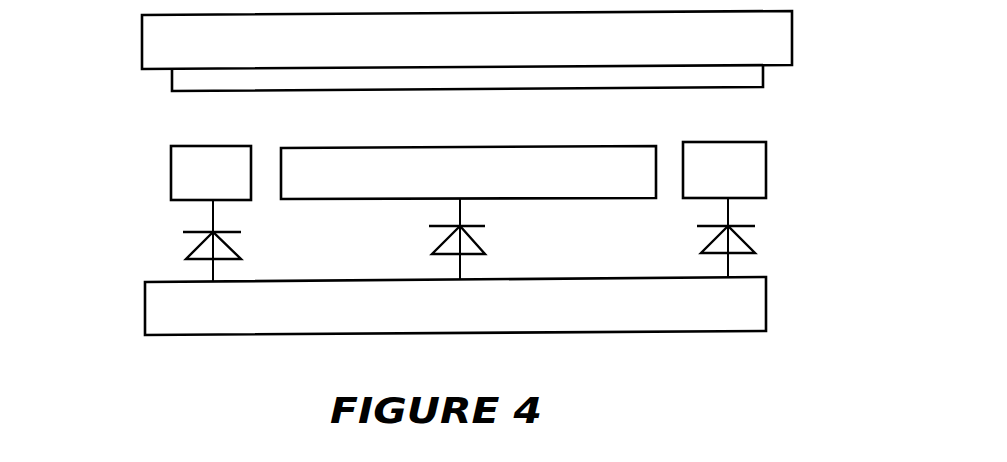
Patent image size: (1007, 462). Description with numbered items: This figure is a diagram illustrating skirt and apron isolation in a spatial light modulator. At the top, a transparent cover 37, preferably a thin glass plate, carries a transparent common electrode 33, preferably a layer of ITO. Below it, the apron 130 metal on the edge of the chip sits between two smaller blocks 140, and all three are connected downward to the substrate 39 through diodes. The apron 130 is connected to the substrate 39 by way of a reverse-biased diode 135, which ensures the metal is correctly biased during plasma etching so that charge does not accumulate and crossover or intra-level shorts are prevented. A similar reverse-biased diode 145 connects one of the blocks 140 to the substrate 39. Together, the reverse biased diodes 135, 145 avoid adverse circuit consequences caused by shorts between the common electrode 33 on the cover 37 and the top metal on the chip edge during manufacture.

The transparent cover 37 is at (467, 40).
The transparent common electrode 33 is at (742, 77).
The apron 130 is at (468, 172).
The light sensor 140 is at (187, 171).
The reverse biased diode 145 is at (215, 251).
The reverse-biased diode 135 is at (458, 242).
The substrate 39 is at (455, 306).